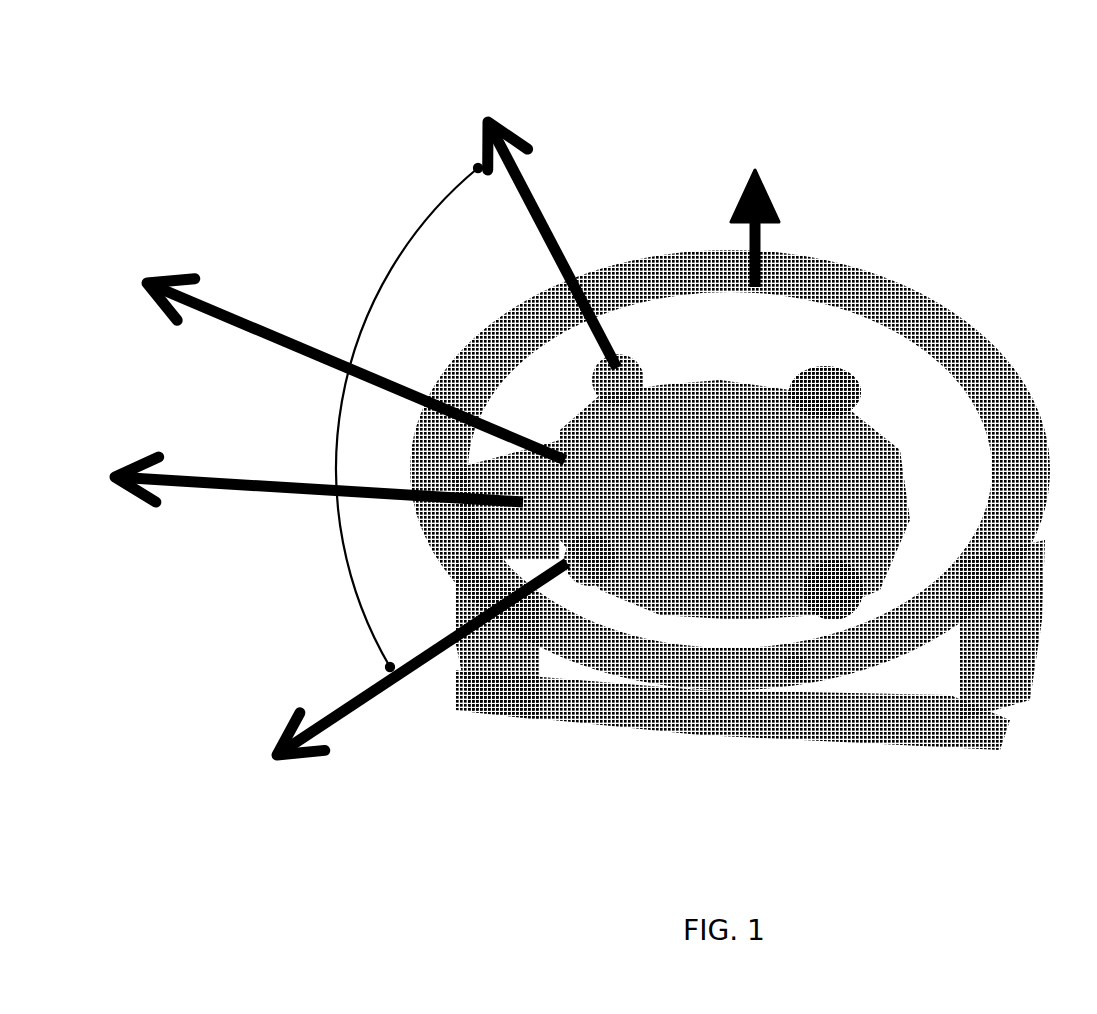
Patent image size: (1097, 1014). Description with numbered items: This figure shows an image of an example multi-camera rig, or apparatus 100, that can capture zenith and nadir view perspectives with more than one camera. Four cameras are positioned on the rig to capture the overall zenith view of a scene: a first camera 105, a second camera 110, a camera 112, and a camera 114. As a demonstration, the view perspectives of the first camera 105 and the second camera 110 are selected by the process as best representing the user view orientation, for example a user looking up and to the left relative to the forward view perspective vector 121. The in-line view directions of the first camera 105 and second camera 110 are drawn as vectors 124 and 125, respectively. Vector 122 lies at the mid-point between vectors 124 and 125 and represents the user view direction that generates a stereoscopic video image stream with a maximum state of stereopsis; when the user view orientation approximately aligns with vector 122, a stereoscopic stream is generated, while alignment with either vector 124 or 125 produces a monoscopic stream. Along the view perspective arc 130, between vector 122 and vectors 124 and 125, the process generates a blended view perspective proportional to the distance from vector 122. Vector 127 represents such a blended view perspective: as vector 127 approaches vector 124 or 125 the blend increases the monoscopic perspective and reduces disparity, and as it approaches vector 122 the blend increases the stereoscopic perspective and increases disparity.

The multi-camera rig 100 is at (948, 52).
The first camera 105 is at (690, 591).
The second camera 110 is at (730, 428).
The camera 112 is at (933, 459).
The camera 114 is at (919, 650).
The forward view perspective vector 121 is at (940, 244).
The stereoscopic view vector 122 is at (350, 269).
The in-line view direction vector of the first camera 124 is at (403, 816).
The in-line view direction vector of the second camera 125 is at (467, 174).
The blended view perspective vector 127 is at (327, 542).
The view perspective arc 130 is at (340, 579).